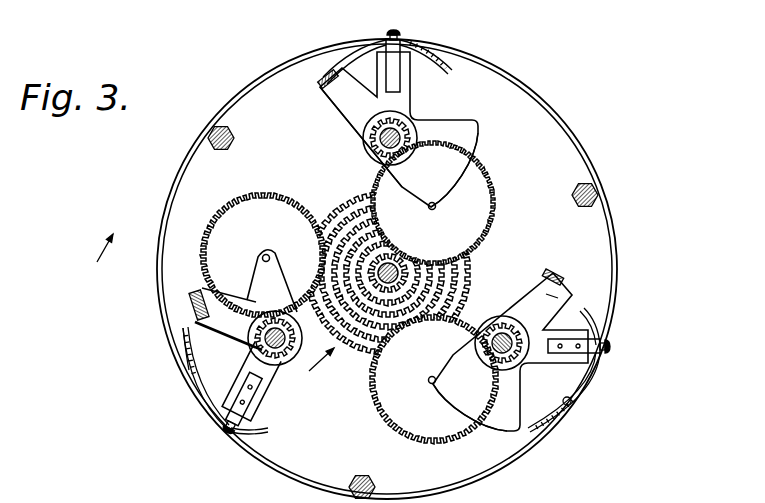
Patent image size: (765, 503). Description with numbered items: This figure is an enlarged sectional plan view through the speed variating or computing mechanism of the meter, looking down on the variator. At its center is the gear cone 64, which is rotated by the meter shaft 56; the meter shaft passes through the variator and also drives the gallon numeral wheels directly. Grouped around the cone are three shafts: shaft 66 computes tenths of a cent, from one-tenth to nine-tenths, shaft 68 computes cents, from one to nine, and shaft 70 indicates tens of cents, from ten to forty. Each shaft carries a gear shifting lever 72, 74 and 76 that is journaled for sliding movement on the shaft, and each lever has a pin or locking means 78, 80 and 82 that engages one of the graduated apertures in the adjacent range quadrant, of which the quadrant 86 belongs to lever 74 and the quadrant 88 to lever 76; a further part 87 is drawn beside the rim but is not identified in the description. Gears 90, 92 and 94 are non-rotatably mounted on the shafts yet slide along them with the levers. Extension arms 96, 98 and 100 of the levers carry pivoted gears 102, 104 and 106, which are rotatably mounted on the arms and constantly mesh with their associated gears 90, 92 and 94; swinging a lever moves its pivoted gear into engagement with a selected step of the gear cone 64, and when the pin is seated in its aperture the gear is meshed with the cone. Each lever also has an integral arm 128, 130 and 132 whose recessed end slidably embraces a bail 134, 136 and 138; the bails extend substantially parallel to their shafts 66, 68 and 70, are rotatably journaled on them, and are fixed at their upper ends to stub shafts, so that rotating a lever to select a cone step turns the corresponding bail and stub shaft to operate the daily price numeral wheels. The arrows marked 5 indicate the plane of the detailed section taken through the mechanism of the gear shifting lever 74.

The section line 5- 5 is at (210, 316).
The meter shaft 56 is at (386, 277).
The gear cone 64 is at (461, 284).
The shaft 66 is at (517, 353).
The shaft 68 is at (282, 357).
The shaft 70 is at (403, 135).
The gear shifting lever 72 is at (575, 335).
The gear shifting lever 74 is at (240, 380).
The gear shifting lever 76 is at (400, 85).
The pin 78 is at (607, 350).
The pin 80 is at (227, 432).
The pin 82 is at (396, 32).
The range quadrant 86 is at (188, 362).
The leaf spring 87 is at (580, 404).
The range quadrant 88 is at (325, 80).
The gear 90 is at (498, 350).
The gear 92 is at (258, 340).
The gear 94 is at (413, 118).
The extension arm 96 is at (508, 418).
The extension arm 98 is at (253, 270).
The extension arm 100 is at (480, 122).
The pivoted gear 102 is at (436, 420).
The pivoted gear 104 is at (232, 227).
The pivoted gear 106 is at (473, 190).
The integral arm 128 is at (560, 298).
The integral arm 130 is at (178, 328).
The integral arm 132 is at (337, 100).
The bail 134 is at (546, 273).
The bail 136 is at (198, 297).
The bail 138 is at (327, 77).